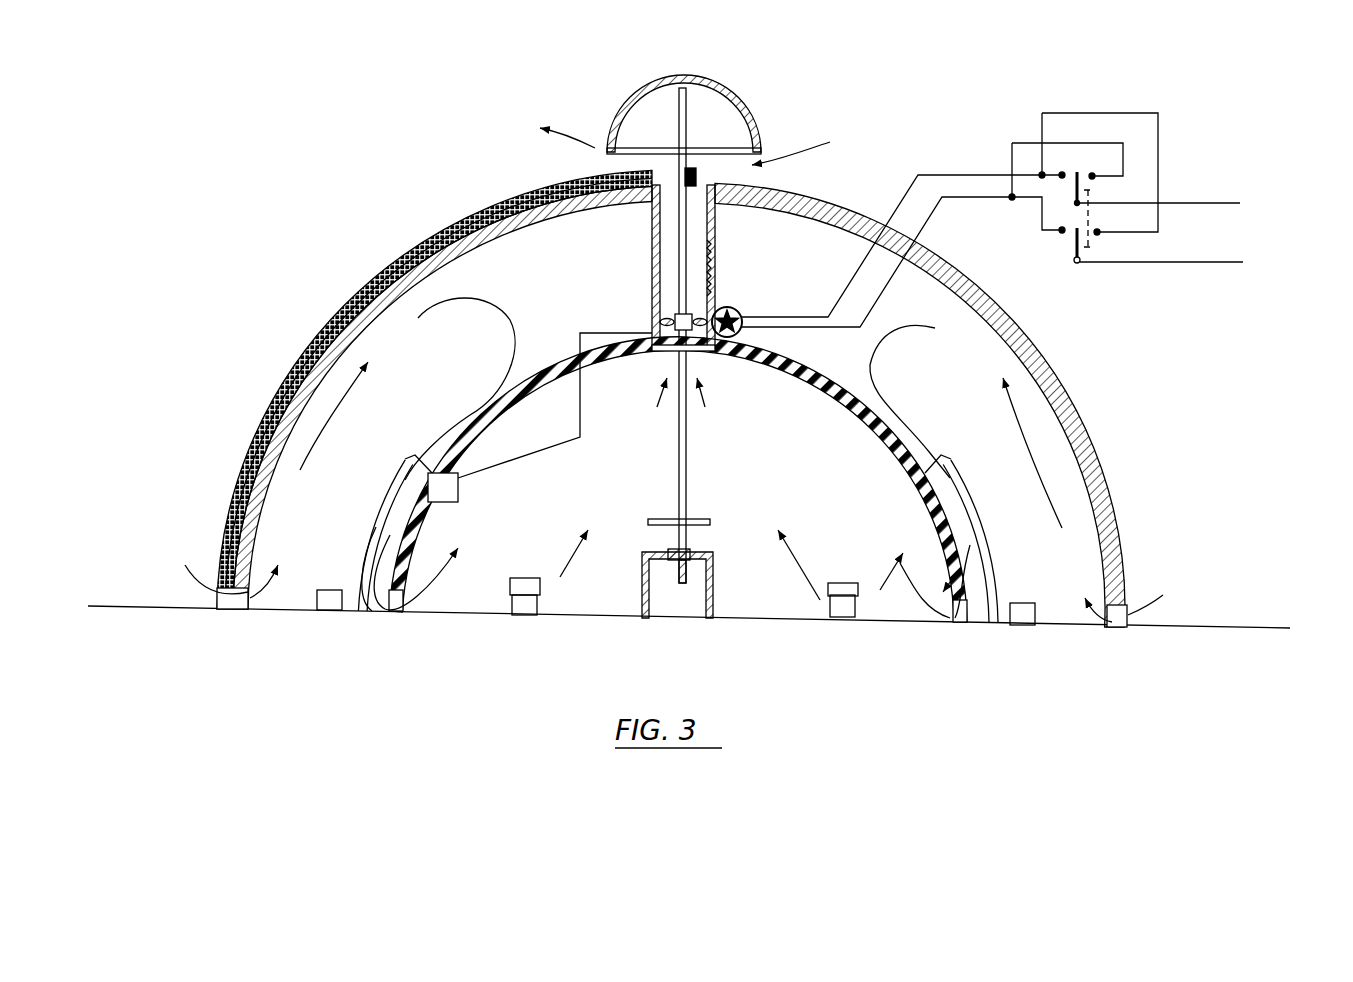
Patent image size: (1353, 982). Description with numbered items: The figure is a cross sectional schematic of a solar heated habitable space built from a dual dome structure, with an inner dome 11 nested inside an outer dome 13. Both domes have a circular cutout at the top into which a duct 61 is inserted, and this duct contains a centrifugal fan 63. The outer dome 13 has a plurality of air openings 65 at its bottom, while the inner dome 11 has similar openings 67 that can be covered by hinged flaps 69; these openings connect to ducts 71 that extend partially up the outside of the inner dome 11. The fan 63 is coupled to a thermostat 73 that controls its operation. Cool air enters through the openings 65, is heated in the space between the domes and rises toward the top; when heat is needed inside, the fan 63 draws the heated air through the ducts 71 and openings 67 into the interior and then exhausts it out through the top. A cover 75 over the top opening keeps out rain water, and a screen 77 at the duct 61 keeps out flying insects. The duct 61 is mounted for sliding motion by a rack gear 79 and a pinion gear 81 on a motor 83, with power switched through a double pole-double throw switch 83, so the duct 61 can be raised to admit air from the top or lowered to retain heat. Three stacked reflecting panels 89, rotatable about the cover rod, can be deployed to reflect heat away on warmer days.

The inner dome 11 is at (823, 373).
The outer dome 13 is at (1053, 375).
The duct 61 is at (719, 243).
The centrifugal fan 63 is at (665, 318).
The air openings 65 is at (223, 601).
The openings 67 is at (371, 565).
The hinged flaps 69 is at (412, 578).
The ducts 71 is at (386, 497).
The thermostat 73 is at (460, 492).
The cover 75 is at (735, 90).
The screen 77 is at (670, 352).
The rack gear 79 is at (715, 282).
The pinion gear 81 is at (745, 330).
The motor 83 is at (740, 312).
The reflecting panels 89 is at (238, 470).